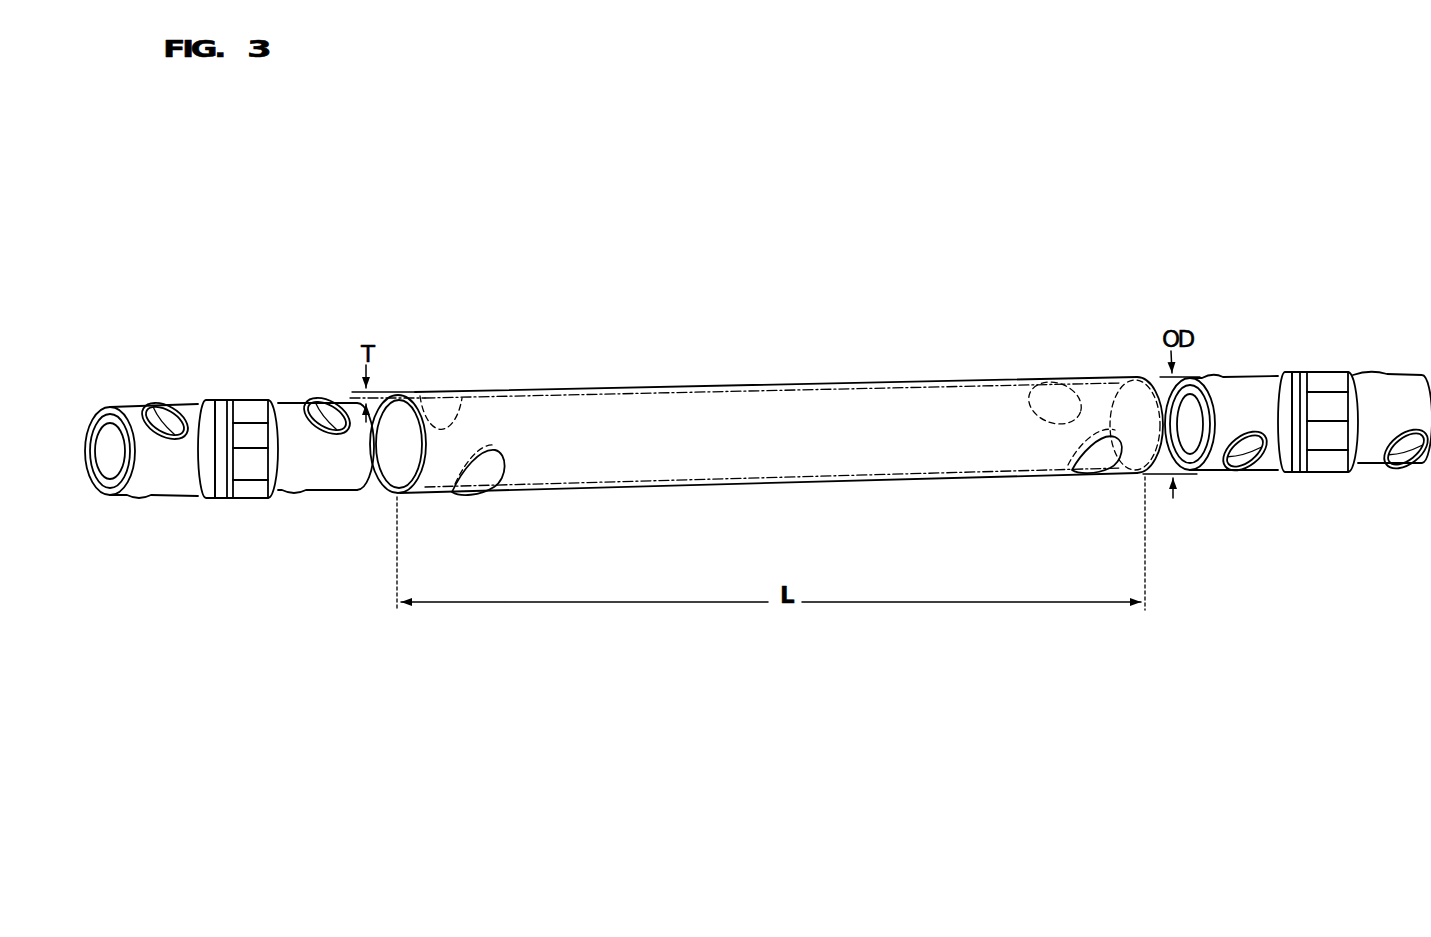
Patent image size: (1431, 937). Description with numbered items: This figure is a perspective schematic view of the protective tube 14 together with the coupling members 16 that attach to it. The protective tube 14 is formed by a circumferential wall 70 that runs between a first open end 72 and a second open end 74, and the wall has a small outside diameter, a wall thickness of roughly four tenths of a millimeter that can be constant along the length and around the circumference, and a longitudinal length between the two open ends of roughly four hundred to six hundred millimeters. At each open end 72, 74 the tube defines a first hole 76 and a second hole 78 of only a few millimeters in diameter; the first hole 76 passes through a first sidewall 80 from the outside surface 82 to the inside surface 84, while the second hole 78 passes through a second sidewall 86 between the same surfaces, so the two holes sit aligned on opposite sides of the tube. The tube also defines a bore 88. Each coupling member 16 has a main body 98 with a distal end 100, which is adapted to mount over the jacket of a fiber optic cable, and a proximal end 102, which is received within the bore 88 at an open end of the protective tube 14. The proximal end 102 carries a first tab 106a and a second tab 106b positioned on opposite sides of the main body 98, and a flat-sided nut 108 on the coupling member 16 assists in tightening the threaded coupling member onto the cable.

The protective tube 14 is at (841, 318).
The coupling member 16 is at (753, 445).
The circumferential wall 70 is at (728, 418).
The first open end 72 is at (383, 492).
The second open end 74 is at (1190, 374).
The first hole 76 is at (437, 400).
The second hole 78 is at (487, 468).
The first sidewall 80 is at (371, 490).
The outside surface 82 is at (373, 428).
The inside surface 84 is at (342, 405).
The second sidewall 86 is at (426, 478).
The bore 88 is at (408, 437).
The main body 98 is at (183, 478).
The distal end 100 is at (224, 445).
The proximal end 102 is at (360, 492).
The first tab 106a is at (149, 407).
The second tab 106b is at (138, 500).
The nut 108 is at (237, 425).